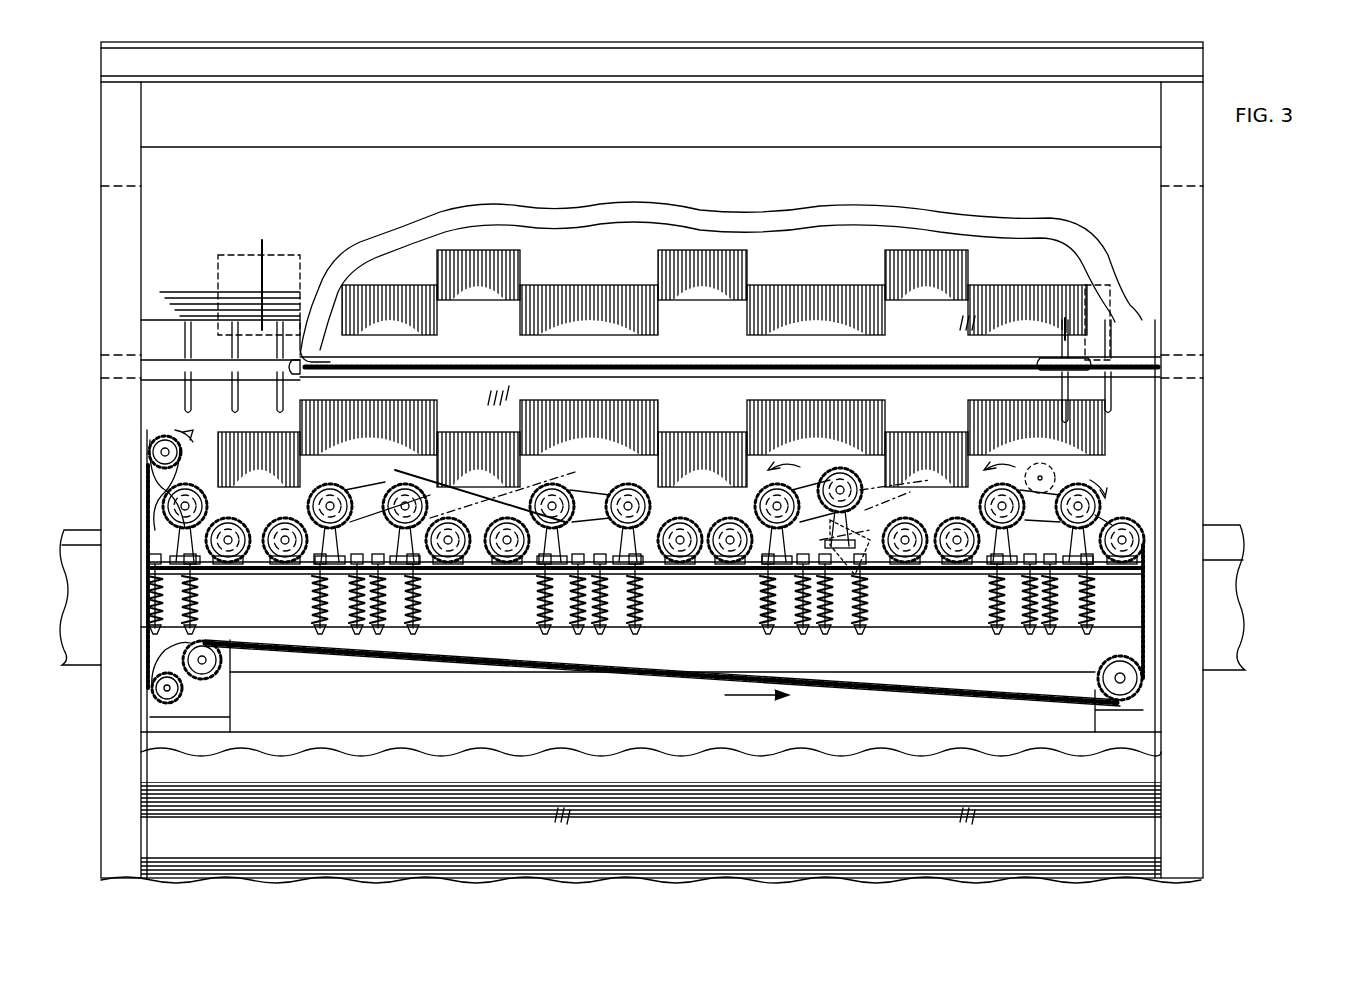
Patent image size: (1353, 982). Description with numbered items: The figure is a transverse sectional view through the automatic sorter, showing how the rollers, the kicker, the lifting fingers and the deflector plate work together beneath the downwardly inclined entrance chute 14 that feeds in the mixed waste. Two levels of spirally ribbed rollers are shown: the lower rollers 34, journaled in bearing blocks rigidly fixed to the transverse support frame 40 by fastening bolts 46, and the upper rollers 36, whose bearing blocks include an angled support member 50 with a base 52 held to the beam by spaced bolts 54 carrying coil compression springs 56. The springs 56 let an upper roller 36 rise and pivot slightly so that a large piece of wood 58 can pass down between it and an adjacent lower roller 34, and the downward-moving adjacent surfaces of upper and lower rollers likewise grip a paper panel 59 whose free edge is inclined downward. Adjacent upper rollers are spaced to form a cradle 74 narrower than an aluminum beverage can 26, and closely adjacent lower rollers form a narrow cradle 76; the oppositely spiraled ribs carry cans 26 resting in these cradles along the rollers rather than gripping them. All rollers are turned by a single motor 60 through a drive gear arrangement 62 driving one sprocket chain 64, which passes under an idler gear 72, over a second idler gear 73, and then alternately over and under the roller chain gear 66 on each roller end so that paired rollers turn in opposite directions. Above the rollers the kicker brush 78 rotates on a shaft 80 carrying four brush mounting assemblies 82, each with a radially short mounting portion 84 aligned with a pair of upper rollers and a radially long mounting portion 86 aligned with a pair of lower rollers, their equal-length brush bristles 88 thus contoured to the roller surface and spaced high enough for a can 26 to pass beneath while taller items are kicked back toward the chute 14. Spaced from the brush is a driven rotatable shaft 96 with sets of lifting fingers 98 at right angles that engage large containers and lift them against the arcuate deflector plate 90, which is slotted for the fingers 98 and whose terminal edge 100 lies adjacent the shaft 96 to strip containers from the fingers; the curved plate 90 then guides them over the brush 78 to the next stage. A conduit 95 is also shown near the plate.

The entrance chute 14 is at (940, 158).
The aluminum beverage can 26 is at (1055, 470).
The lower roller 34 is at (272, 500).
The upper roller 36 is at (150, 484).
The support frame 40 is at (690, 640).
The fastening bolt 46 is at (272, 568).
The angled support member 50 is at (572, 520).
The base 52 is at (535, 585).
The bolt 54 is at (1085, 620).
The coil compression spring 56 is at (1018, 612).
The large piece of wood 58 is at (905, 500).
The paper panel 59 is at (430, 500).
The motor 60 is at (215, 680).
The drive gear arrangement 62 is at (165, 698).
The sprocket chain 64 is at (462, 660).
The roller chain gear 66 is at (672, 480).
The idler gear 72 is at (1105, 695).
The second idler gear 73 is at (150, 456).
The cradle 74 is at (372, 478).
The narrow cradle 76 is at (705, 512).
The kicker brush 78 is at (629, 264).
The shaft 80 is at (962, 380).
The brush mounting assembly 82 is at (950, 345).
The mounting portion 84 is at (825, 345).
The mounting portion 86 is at (925, 300).
The brush bristles 88 is at (790, 282).
The deflector plate 90 is at (555, 212).
The conduit 95 is at (303, 328).
The rotatable shaft 96 is at (650, 362).
The lifting finger 98 is at (185, 395).
The terminal edge 100 is at (262, 330).